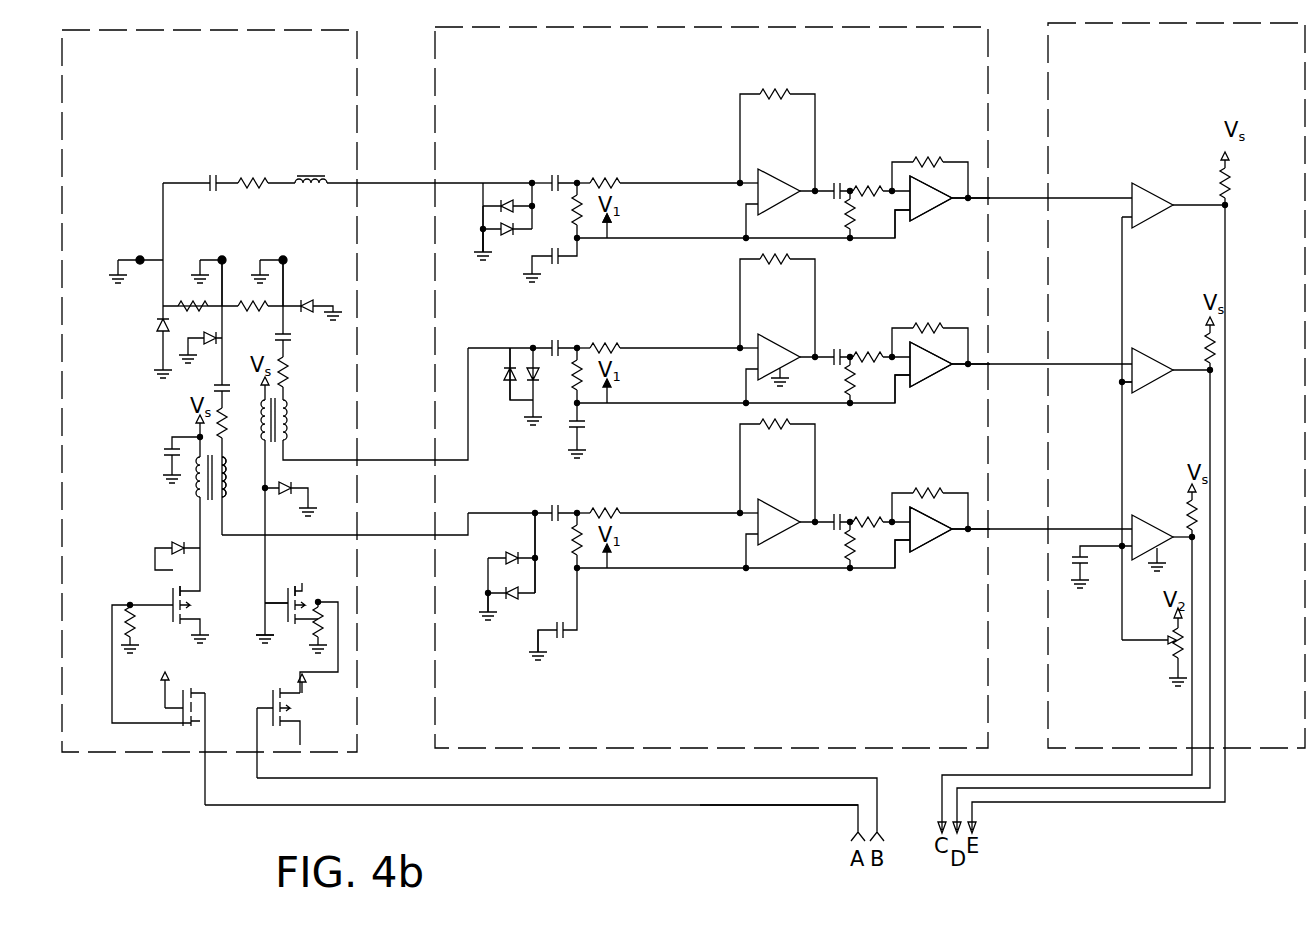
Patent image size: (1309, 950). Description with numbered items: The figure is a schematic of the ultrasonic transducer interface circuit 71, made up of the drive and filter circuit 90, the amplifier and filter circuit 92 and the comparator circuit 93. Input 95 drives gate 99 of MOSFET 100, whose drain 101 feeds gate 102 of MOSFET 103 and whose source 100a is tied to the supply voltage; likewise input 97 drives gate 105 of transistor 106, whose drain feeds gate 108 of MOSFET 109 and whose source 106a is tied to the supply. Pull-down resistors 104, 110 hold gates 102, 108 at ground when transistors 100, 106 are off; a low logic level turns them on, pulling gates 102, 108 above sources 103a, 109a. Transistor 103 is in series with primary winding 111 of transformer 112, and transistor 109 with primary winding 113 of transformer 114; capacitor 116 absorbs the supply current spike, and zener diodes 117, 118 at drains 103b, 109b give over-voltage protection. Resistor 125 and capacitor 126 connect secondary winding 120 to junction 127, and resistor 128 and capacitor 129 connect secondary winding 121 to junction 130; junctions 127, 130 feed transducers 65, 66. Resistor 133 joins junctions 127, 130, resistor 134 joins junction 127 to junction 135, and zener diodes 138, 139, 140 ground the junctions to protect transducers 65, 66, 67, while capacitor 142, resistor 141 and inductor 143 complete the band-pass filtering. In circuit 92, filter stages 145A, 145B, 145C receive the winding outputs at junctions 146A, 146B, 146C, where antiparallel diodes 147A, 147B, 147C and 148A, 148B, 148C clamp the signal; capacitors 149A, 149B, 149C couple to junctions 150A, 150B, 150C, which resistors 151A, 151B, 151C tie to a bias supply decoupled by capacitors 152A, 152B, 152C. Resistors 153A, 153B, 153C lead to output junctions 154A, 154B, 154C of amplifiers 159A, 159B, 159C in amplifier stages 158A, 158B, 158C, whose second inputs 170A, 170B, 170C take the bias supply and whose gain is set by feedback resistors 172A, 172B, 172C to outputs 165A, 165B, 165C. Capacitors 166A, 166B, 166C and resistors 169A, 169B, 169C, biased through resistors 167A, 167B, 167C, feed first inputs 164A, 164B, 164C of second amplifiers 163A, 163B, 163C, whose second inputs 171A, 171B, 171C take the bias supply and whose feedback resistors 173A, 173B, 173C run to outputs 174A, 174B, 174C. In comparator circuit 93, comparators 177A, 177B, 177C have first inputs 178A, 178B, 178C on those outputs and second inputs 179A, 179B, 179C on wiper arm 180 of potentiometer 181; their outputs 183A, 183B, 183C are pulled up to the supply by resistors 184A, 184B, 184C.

The ultrasonic drive and filter circuit 90 is at (190, 140).
The amplifier and filter circuit 92 is at (597, 100).
The comparator circuit 93 is at (1175, 100).
The ultrasonic transducer interface circuit 71 is at (764, 810).
The input 95 is at (495, 807).
The input 97 is at (586, 780).
The gate 99 is at (204, 720).
The ultrasonic transducer 65 is at (223, 256).
The ultrasonic transducer 66 is at (284, 256).
The ultrasonic transducer 67 is at (140, 255).
The capacitor 142 is at (213, 174).
The resistor 141 is at (252, 176).
The inductor 143 is at (308, 174).
The resistor 134 is at (188, 300).
The junction 135 is at (163, 306).
The resistor 133 is at (245, 309).
The junction 127 is at (224, 300).
The junction 130 is at (284, 303).
The zener diode 139 is at (308, 302).
The zener diode 140 is at (160, 338).
The zener diode 138 is at (208, 344).
The capacitor 126 is at (215, 389).
The resistor 125 is at (218, 425).
The capacitor 116 is at (168, 452).
The primary winding 111 is at (196, 478).
The secondary winding 120 is at (230, 495).
The transformer 112 is at (204, 512).
The capacitor 129 is at (292, 338).
The resistor 128 is at (290, 373).
The secondary winding 121 is at (288, 422).
The transformer 114 is at (287, 462).
The zener diode 118 is at (288, 486).
The primary winding 113 is at (262, 522).
The zener diode 117 is at (172, 545).
The MOSFET 103 is at (172, 586).
The source 103a is at (262, 634).
The drain 103b is at (185, 591).
The gate 102 is at (128, 604).
The pull-down resistor 104 is at (127, 627).
The drain 101 is at (186, 726).
The MOSFET 100 is at (190, 735).
The source 100a is at (170, 696).
The MOSFET 109 is at (296, 578).
The source 109a is at (262, 605).
The drain 109b is at (294, 584).
The gate 108 is at (320, 602).
The pull-down resistor 110 is at (324, 625).
The transistor 106 is at (286, 735).
The source 106a is at (292, 706).
The gate 105 is at (258, 706).
The filter stage 145C is at (508, 128).
The junction 146C is at (532, 178).
The diode 147C is at (508, 234).
The diode 148C is at (505, 204).
The capacitor 149C is at (553, 176).
The junction 150C is at (577, 178).
The resistor 151C is at (575, 225).
The capacitor 152C is at (562, 258).
The resistor 153C is at (600, 178).
The output junction 154C is at (740, 178).
The amplifier 159C is at (790, 182).
The second input 170C is at (746, 214).
The output 165C is at (743, 224).
The feedback resistor 172C is at (775, 92).
The amplifier stage 158C is at (895, 70).
The capacitor 166C is at (837, 182).
The resistor 167C is at (850, 186).
The resistor 169C is at (868, 185).
The second amplifier 163C is at (935, 208).
The feedback resistor 173C is at (928, 160).
The output 174C is at (968, 200).
The second input 171C is at (852, 236).
The first input 164C is at (896, 230).
The junction 146B is at (530, 345).
The diode 147B is at (532, 345).
The diode 148B is at (508, 390).
The capacitor 149B is at (554, 340).
The junction 150B is at (578, 344).
The resistor 151B is at (576, 390).
The capacitor 152B is at (582, 426).
The resistor 153B is at (605, 343).
The output junction 154B is at (740, 352).
The amplifier 159B is at (790, 347).
The second input 170B is at (746, 380).
The output 165B is at (806, 404).
The feedback resistor 172B is at (775, 257).
The amplifier stage 158B is at (922, 387).
The capacitor 166B is at (837, 348).
The resistor 167B is at (849, 352).
The resistor 169B is at (868, 352).
The second amplifier 163B is at (935, 358).
The feedback resistor 173B is at (930, 326).
The output 174B is at (968, 366).
The second input 171B is at (852, 402).
The first input 164B is at (896, 400).
The filter stage 145B is at (548, 472).
The filter stage 145A is at (578, 672).
The junction 146A is at (533, 510).
The diode 147A is at (512, 600).
The diode 148A is at (508, 556).
The capacitor 149A is at (556, 506).
The junction 150A is at (578, 509).
The resistor 151A is at (578, 560).
The capacitor 152A is at (560, 636).
The resistor 153A is at (605, 508).
The output junction 154A is at (740, 517).
The amplifier 159A is at (790, 512).
The second input 170A is at (746, 570).
The output 165A is at (806, 569).
The feedback resistor 172A is at (775, 422).
The amplifier stage 158A is at (855, 610).
The capacitor 166A is at (837, 514).
The resistor 167A is at (849, 517).
The resistor 169A is at (868, 517).
The second amplifier 163A is at (935, 540).
The feedback resistor 173A is at (930, 491).
The output 174A is at (968, 531).
The second input 171A is at (852, 567).
The first input 164A is at (896, 565).
The first input 178C is at (1130, 196).
The comparator 177C is at (1180, 200).
The pull-up resistor 184C is at (1230, 180).
The output 183C is at (1228, 215).
The second input 179C is at (1122, 218).
The first input 178B is at (1130, 361).
The comparator 177B is at (1178, 362).
The pull-up resistor 184B is at (1214, 344).
The output 183B is at (1213, 380).
The second input 179B is at (1122, 384).
The first input 178A is at (1130, 528).
The comparator 177A is at (1176, 530).
The pull-up resistor 184A is at (1198, 512).
The output 183A is at (1196, 545).
The second input 179A is at (1121, 550).
The potentiometer wiper arm 180 is at (1172, 650).
The potentiometer 181 is at (1176, 680).